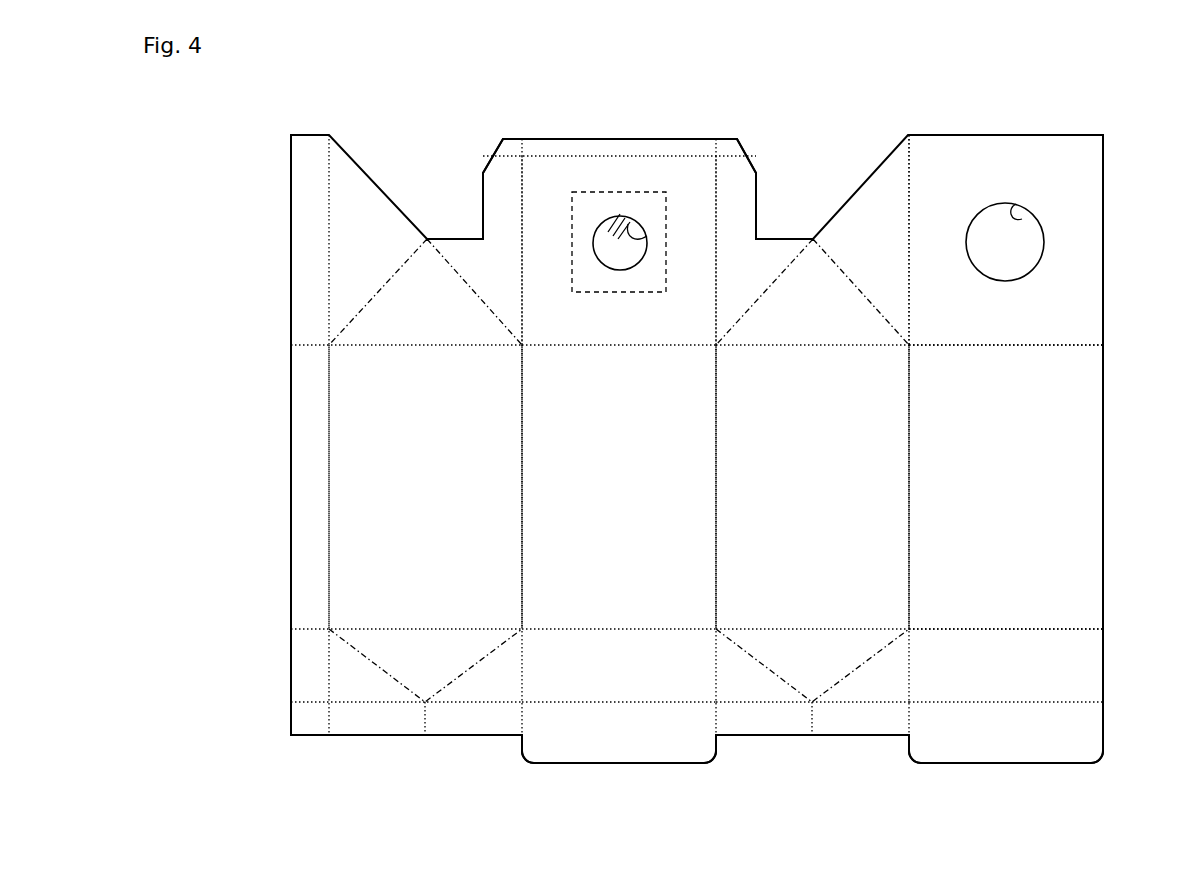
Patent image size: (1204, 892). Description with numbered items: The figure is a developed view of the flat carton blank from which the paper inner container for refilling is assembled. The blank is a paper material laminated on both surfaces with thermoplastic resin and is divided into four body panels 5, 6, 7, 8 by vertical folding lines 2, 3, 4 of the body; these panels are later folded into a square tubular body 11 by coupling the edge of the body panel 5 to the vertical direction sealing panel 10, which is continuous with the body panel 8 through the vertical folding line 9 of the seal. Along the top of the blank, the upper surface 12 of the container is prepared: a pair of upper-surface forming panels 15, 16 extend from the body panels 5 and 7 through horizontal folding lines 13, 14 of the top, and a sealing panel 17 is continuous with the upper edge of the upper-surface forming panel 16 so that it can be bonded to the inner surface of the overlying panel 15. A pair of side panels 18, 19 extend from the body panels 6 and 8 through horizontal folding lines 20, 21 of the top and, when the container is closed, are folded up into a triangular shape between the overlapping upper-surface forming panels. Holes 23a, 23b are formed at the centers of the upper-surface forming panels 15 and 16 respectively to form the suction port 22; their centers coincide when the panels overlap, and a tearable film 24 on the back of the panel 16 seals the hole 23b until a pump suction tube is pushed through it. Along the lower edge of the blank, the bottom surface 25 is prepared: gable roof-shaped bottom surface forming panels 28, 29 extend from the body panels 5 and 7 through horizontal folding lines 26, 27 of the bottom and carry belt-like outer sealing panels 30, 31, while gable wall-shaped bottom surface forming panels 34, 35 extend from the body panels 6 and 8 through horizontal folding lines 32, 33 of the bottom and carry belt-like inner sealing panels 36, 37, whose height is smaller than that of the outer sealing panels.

The vertical folding line of the body 2 is at (909, 448).
The vertical folding line of the body 3 is at (716, 448).
The vertical folding line of the body 4 is at (522, 448).
The body panel 5 is at (990, 504).
The body panel 6 is at (798, 504).
The body panel 7 is at (607, 504).
The body panel 8 is at (416, 504).
The vertical folding line of the seal 9 is at (329, 448).
The vertical direction sealing panel 10 is at (291, 485).
The body 11 is at (1103, 450).
The upper surface 12 is at (1103, 238).
The horizontal folding line of the top 13 is at (1007, 350).
The horizontal folding line of the top 14 is at (610, 350).
The upper-surface forming panel 15 is at (1030, 306).
The upper-surface forming panel 16 is at (673, 306).
The sealing panel 17 is at (653, 140).
The side panel 18 is at (799, 306).
The side panel 19 is at (410, 306).
The horizontal folding line of the top 20 is at (808, 350).
The horizontal folding line of the top 21 is at (411, 350).
The suction port 22 is at (610, 256).
The hole 23a is at (1022, 219).
The hole 23b is at (647, 236).
The film 24 is at (590, 198).
The bottom surface 25 is at (1103, 662).
The horizontal folding line of the bottom 26 is at (1002, 628).
The horizontal folding line of the bottom 27 is at (627, 628).
The gable roof-shaped bottom surface forming panel 28 is at (985, 676).
The gable roof-shaped bottom surface forming panel 29 is at (604, 676).
The outer sealing panel 30 is at (1015, 756).
The outer sealing panel 31 is at (604, 756).
The horizontal folding line of the bottom 32 is at (818, 628).
The horizontal folding line of the bottom 33 is at (425, 628).
The gable wall-shaped bottom surface forming panel 34 is at (792, 676).
The gable wall-shaped bottom surface forming panel 35 is at (410, 676).
The inner sealing panel 36 is at (828, 728).
The inner sealing panel 37 is at (440, 727).